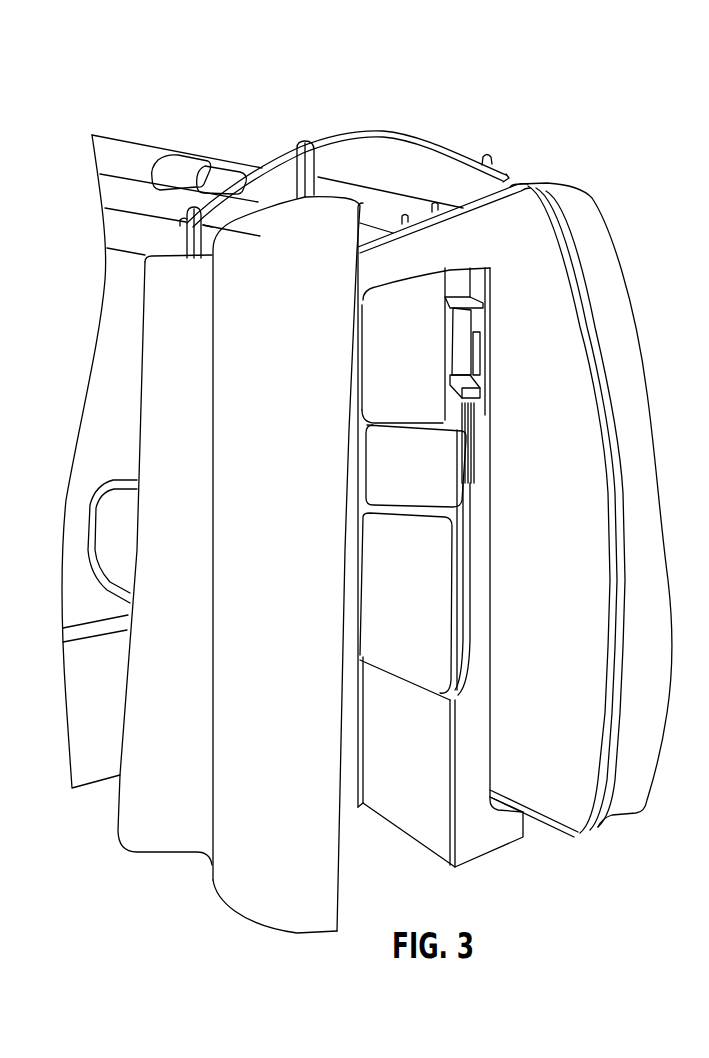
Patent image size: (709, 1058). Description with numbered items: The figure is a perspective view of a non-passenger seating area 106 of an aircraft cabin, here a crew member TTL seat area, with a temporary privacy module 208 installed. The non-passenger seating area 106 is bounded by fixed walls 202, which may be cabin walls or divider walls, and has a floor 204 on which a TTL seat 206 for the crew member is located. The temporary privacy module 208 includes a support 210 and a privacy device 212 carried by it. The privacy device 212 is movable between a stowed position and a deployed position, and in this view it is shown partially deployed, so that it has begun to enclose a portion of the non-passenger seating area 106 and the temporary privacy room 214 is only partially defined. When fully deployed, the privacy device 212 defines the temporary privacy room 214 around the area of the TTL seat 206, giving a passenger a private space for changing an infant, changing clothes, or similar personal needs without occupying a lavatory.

The non-passenger seating area 106 is at (278, 129).
The fixed wall 202 is at (123, 197).
The floor 204 is at (503, 905).
The TTL seat 206 is at (460, 563).
The temporary privacy module 208 is at (481, 75).
The support 210 is at (418, 145).
The privacy device 212 is at (145, 797).
The temporary privacy room 214 is at (402, 185).